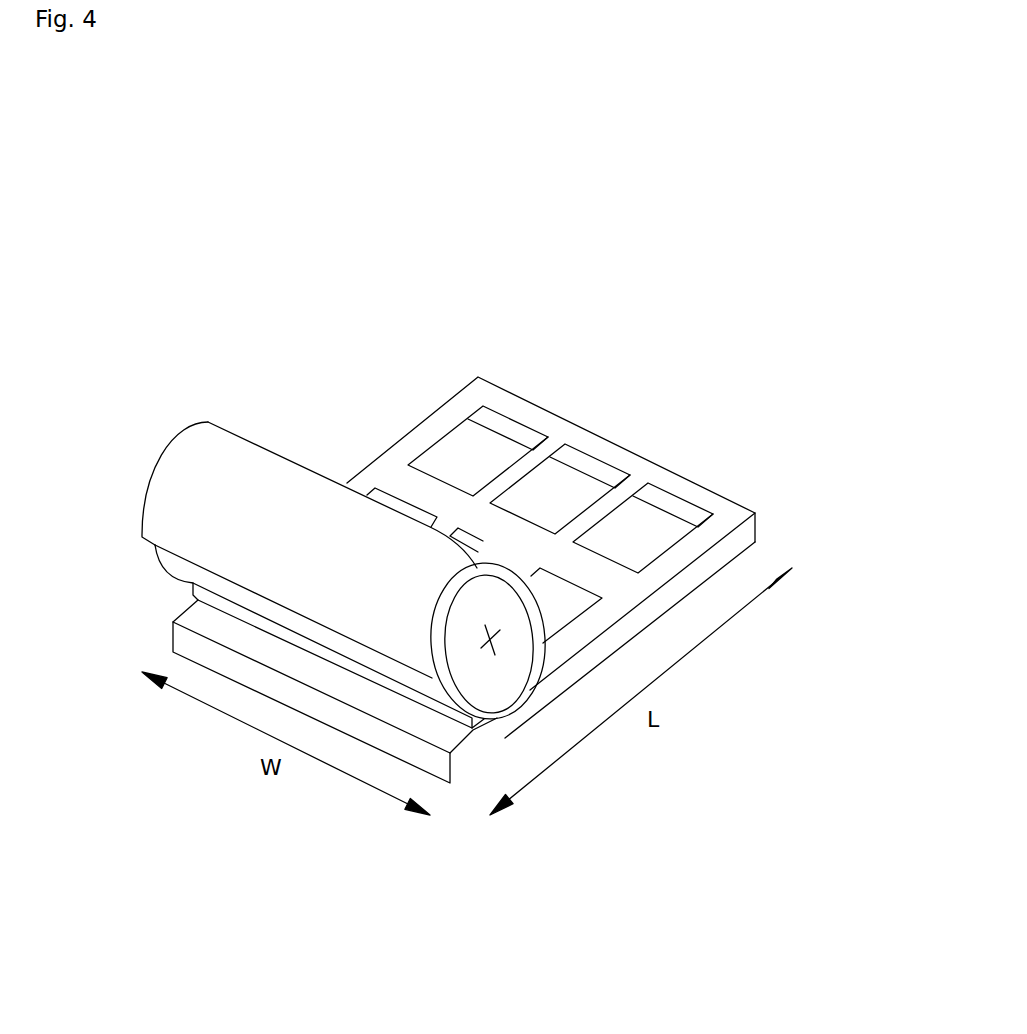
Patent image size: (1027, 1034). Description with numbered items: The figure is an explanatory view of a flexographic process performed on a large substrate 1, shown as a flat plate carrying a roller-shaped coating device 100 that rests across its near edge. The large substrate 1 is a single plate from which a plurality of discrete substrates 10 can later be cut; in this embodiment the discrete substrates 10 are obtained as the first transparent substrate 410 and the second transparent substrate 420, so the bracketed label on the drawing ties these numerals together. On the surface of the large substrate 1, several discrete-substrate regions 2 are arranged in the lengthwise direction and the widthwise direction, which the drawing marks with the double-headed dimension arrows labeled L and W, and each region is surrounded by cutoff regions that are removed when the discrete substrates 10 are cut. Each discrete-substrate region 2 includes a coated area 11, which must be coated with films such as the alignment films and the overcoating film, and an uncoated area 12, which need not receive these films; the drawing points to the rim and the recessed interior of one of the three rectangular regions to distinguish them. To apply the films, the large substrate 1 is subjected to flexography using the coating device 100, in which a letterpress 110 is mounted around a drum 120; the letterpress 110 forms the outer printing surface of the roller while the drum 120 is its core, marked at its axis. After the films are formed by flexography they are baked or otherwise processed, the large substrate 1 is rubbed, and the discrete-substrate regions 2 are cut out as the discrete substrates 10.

The large substrate 1 is at (562, 418).
The discrete-substrate region 2 is at (591, 432).
The discrete substrate 10 is at (591, 432).
The first transparent substrate 410 is at (591, 432).
The second transparent substrate 420 is at (578, 292).
The coated area 11 is at (490, 407).
The uncoated area 12 is at (447, 453).
The coating device 100 is at (548, 822).
The letterpress 110 is at (488, 718).
The drum 120 is at (488, 688).